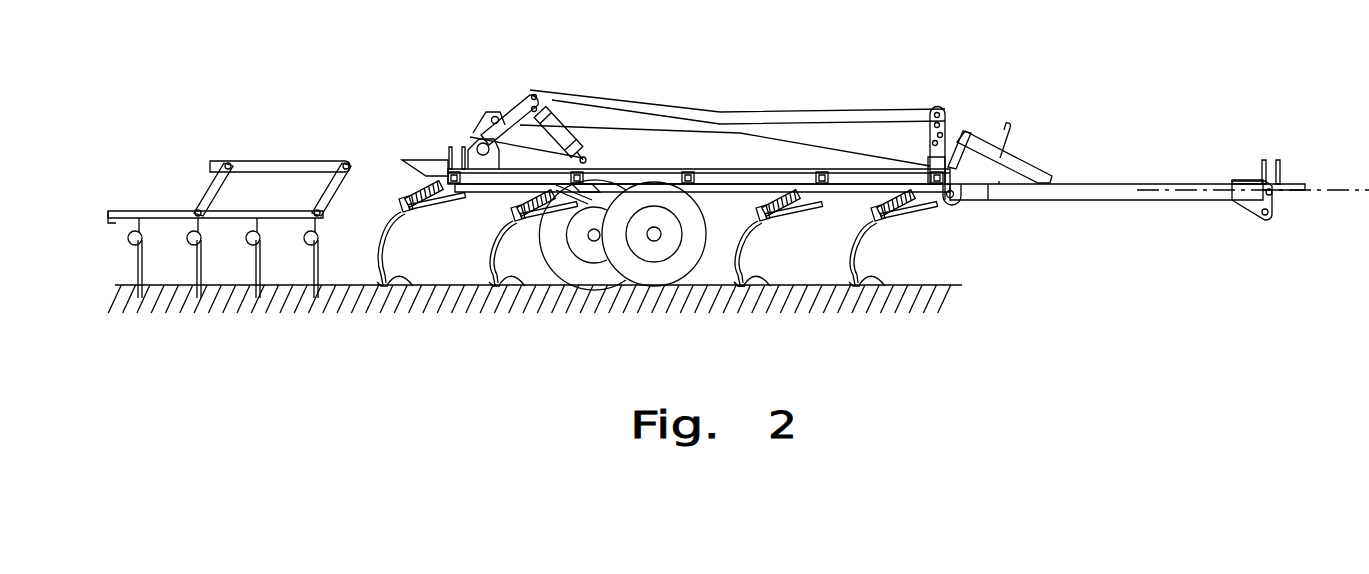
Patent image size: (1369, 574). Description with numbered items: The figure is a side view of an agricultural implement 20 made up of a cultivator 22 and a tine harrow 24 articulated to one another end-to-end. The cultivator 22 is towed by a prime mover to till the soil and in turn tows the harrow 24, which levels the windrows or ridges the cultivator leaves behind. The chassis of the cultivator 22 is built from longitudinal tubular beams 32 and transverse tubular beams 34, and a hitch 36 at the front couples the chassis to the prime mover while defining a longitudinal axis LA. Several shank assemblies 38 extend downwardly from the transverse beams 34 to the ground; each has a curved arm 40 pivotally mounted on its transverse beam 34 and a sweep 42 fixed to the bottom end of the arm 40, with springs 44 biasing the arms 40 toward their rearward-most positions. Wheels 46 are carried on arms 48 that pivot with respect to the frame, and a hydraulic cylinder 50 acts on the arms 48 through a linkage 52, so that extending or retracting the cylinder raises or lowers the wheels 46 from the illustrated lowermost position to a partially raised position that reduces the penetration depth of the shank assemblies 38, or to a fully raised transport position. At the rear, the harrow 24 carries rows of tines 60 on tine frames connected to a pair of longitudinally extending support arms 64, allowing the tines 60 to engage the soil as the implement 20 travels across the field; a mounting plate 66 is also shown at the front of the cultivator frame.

The agricultural implement 20 is at (985, 90).
The cultivator 22 is at (840, 106).
The tine harrow 24 is at (290, 158).
The longitudinal tubular beam 32 is at (720, 190).
The transverse tubular beam 34 is at (459, 148).
The hitch 36 is at (1078, 197).
The shank assembly 38 is at (390, 259).
The curved arm 40 is at (736, 256).
The sweep 42 is at (762, 282).
The spring 44 is at (410, 203).
The wheel 46 is at (643, 275).
The arm 48 is at (594, 178).
The hydraulic cylinder 50 is at (560, 133).
The linkage 52 is at (522, 105).
The tine 60 is at (143, 276).
The support arm 64 is at (267, 212).
The mounting plate 66 is at (432, 167).
The longitudinal axis LA is at (1326, 190).